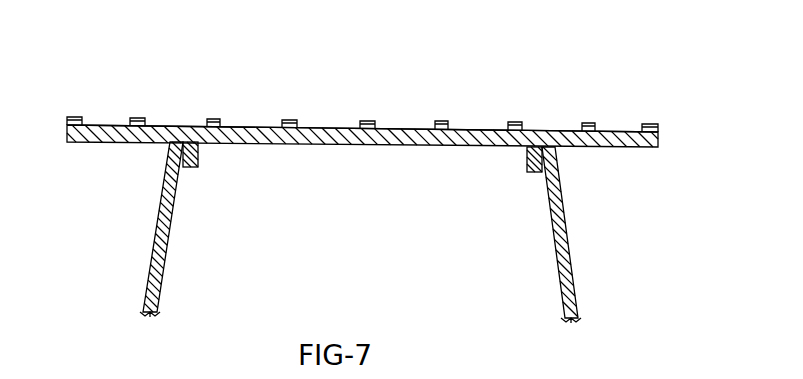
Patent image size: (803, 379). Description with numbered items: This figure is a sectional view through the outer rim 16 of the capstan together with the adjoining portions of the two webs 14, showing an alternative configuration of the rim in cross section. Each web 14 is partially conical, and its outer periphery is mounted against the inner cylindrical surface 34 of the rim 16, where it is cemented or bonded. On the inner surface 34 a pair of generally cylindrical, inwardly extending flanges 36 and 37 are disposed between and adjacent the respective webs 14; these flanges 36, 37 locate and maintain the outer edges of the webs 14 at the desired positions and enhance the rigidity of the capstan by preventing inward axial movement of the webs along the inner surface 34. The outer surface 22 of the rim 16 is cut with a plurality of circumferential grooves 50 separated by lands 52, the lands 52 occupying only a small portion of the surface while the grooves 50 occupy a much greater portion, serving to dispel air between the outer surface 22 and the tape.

The webs 14 is at (168, 239).
The outer rim 16 is at (570, 148).
The outer surface 22 is at (72, 117).
The inner cylindrical surface 34 is at (611, 147).
The flange 36 is at (190, 167).
The flange 37 is at (533, 172).
The circumferential grooves 50 is at (168, 126).
The lands 52 is at (226, 121).